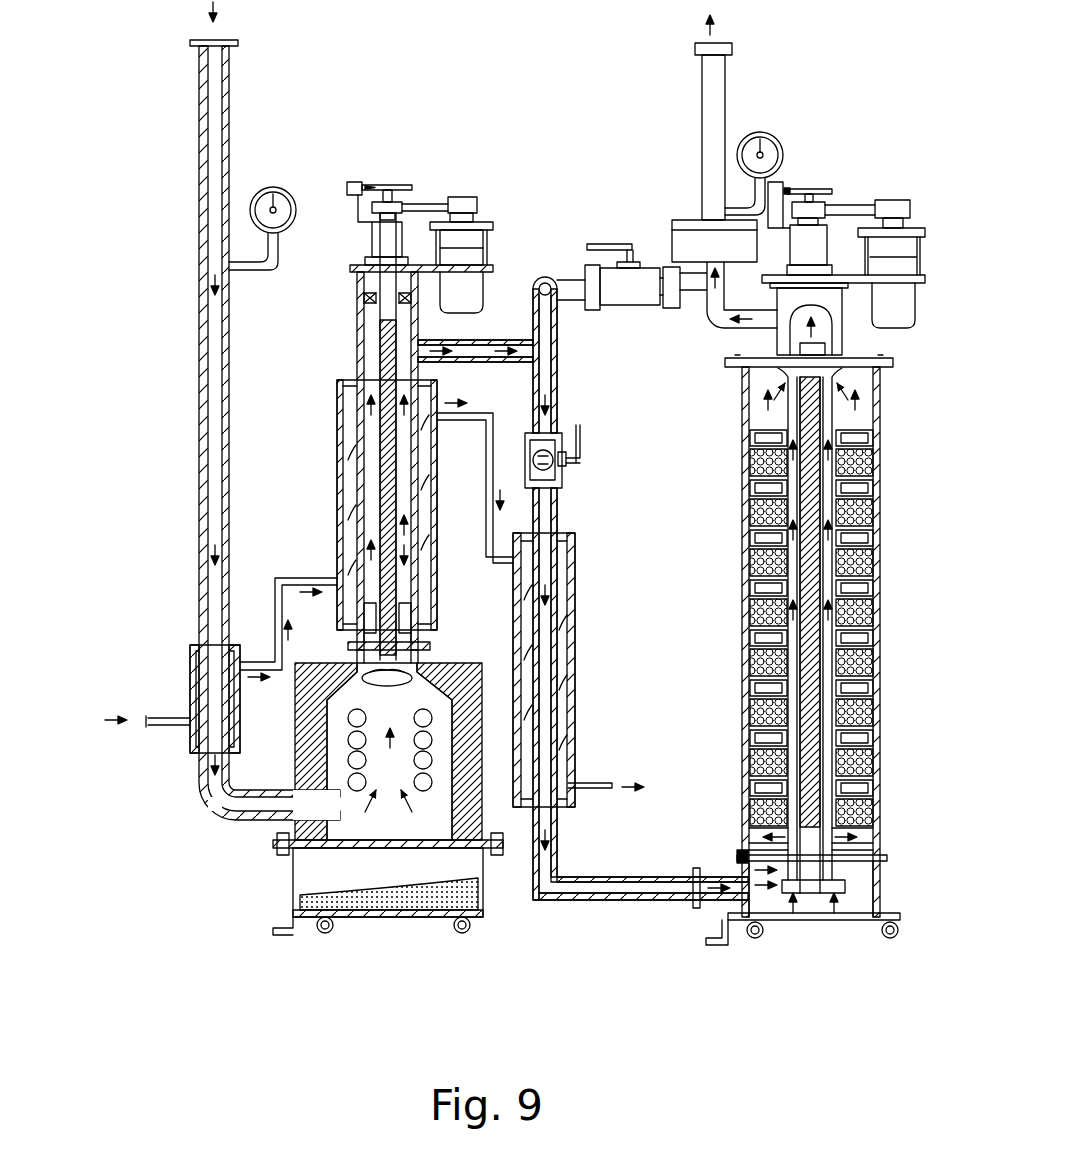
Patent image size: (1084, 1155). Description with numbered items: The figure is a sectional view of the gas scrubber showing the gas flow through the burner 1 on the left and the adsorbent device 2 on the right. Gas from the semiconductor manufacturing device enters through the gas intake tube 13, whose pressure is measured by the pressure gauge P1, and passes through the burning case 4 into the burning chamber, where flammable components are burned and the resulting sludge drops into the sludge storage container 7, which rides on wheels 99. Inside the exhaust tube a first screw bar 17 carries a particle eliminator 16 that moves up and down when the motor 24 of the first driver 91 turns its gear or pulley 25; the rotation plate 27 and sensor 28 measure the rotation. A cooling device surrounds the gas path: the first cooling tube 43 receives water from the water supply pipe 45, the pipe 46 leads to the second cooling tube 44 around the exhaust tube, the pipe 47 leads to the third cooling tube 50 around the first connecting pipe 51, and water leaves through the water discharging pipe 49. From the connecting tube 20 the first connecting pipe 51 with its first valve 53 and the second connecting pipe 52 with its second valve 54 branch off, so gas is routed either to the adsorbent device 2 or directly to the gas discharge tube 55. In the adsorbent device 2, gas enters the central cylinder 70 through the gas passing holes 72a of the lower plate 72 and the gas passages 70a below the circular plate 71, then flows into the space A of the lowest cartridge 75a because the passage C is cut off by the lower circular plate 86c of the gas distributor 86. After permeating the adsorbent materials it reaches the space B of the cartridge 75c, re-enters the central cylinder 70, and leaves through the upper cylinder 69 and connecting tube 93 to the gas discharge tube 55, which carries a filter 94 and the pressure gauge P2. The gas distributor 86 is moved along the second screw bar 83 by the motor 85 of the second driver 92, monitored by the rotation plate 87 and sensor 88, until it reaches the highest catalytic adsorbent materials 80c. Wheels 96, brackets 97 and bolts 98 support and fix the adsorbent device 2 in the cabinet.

The burner 1 is at (178, 380).
The adsorbent device 2 is at (896, 612).
The burning case 4 is at (297, 702).
The sludge storage container 7 is at (293, 873).
The gas intake tube 13 is at (199, 210).
The particle eliminator 16 is at (418, 637).
The first screw bar 17 is at (380, 482).
The connecting tube 20 is at (468, 362).
The motor 24 is at (470, 297).
The gear or pulley 25 is at (462, 197).
The rotation plate 27 is at (400, 200).
The sensor 28 is at (355, 182).
The first cooling tube 43 is at (190, 690).
The second cooling tube 44 is at (337, 437).
The water supply pipe 45 is at (183, 728).
The pipe 46 is at (305, 578).
The pipe 47 is at (486, 524).
The water discharging pipe 49 is at (592, 790).
The third cooling tube 50 is at (575, 592).
The first connecting pipe 51 is at (557, 527).
The second connecting pipe 52 is at (557, 395).
The first valve 53 is at (578, 447).
The second valve 54 is at (612, 240).
The gas discharge tube 55 is at (702, 135).
The upper cylinder 69 is at (838, 338).
The central cylinder 70 is at (840, 416).
The gas passages 70a is at (745, 855).
The circular plate 71 is at (870, 870).
The lower plate 72 is at (805, 895).
The gas passing holes 72a is at (820, 895).
The lowest cartridge 75a is at (855, 810).
The cartridge 75c is at (765, 758).
The highest catalytic adsorbent materials 80c is at (860, 460).
The second screw bar 83 is at (860, 563).
The motor 85 is at (910, 300).
The gas distributor 86 is at (870, 757).
The lower circular plate 86c is at (862, 830).
The rotation plate 87 is at (815, 190).
The sensor 88 is at (778, 182).
The first driver 91 is at (448, 142).
The second driver 92 is at (889, 145).
The connecting tube 93 is at (722, 330).
The filter 94 is at (688, 220).
The wheels 96 is at (761, 938).
The brackets 97 is at (716, 940).
The bolts 98 is at (710, 930).
The wheels 99 is at (470, 926).
The space A is at (868, 838).
The space B is at (757, 795).
The passage C is at (830, 490).
The pressure gauge P1 is at (276, 188).
The pressure gauge P2 is at (763, 132).